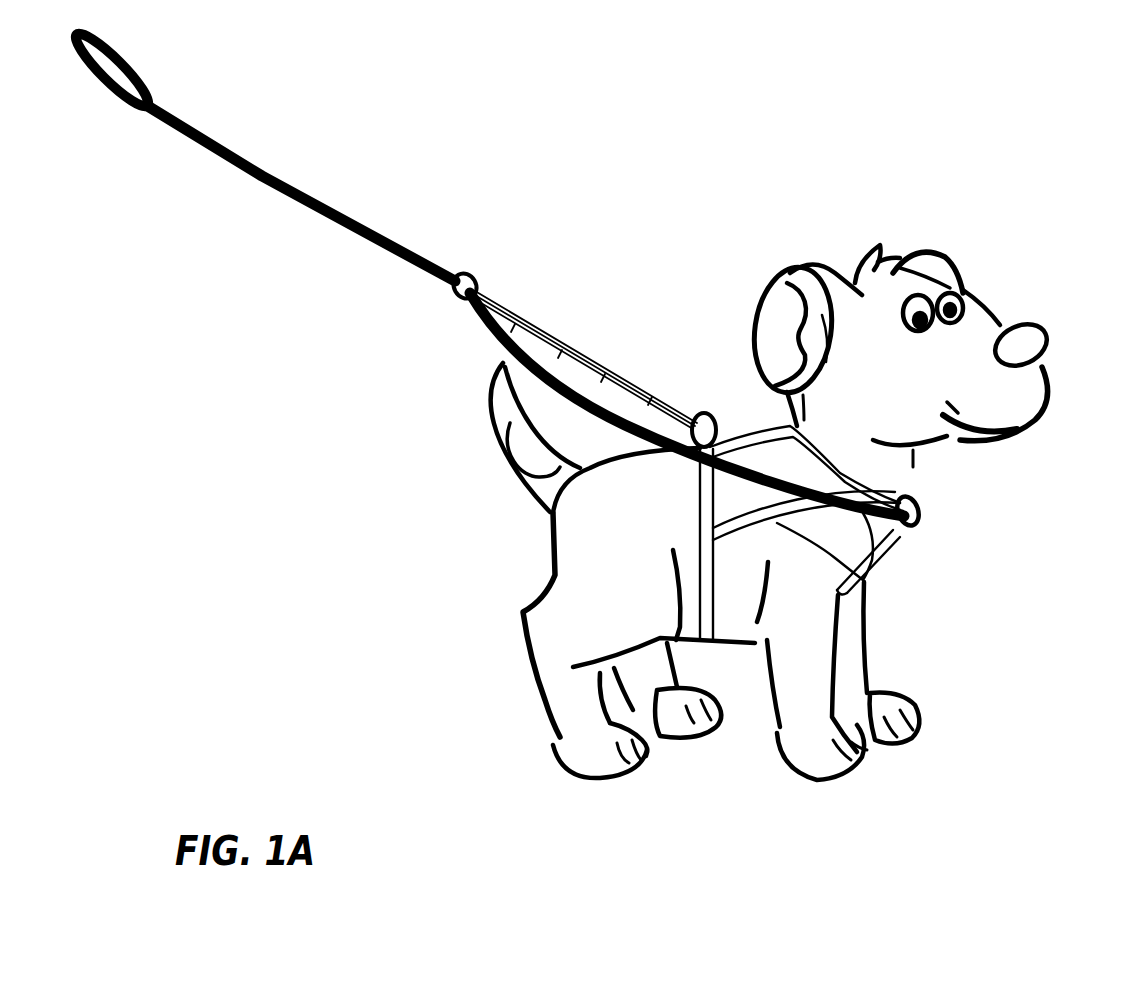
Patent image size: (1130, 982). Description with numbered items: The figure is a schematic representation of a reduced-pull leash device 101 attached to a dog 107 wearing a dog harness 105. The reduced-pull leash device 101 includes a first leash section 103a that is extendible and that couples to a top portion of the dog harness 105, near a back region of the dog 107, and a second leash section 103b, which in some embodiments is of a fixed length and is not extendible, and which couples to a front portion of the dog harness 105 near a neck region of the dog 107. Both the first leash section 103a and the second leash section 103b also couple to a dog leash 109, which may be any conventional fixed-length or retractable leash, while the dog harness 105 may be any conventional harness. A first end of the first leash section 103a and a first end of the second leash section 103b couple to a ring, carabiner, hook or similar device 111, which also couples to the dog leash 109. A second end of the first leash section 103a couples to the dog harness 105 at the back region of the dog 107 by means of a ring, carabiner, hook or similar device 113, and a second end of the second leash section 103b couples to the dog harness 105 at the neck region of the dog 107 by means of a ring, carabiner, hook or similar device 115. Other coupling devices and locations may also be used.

The reduced-pull leash device 101 is at (560, 314).
The first leash section 103a is at (603, 374).
The second leash section 103b is at (873, 560).
The dog harness 105 is at (869, 590).
The dog 107 is at (980, 276).
The dog leash 109 is at (297, 187).
The ring, carabiner, hook or similar device 111 is at (450, 294).
The ring, carabiner, hook or similar device 113 is at (708, 418).
The ring, carabiner, hook or similar device 115 is at (920, 510).